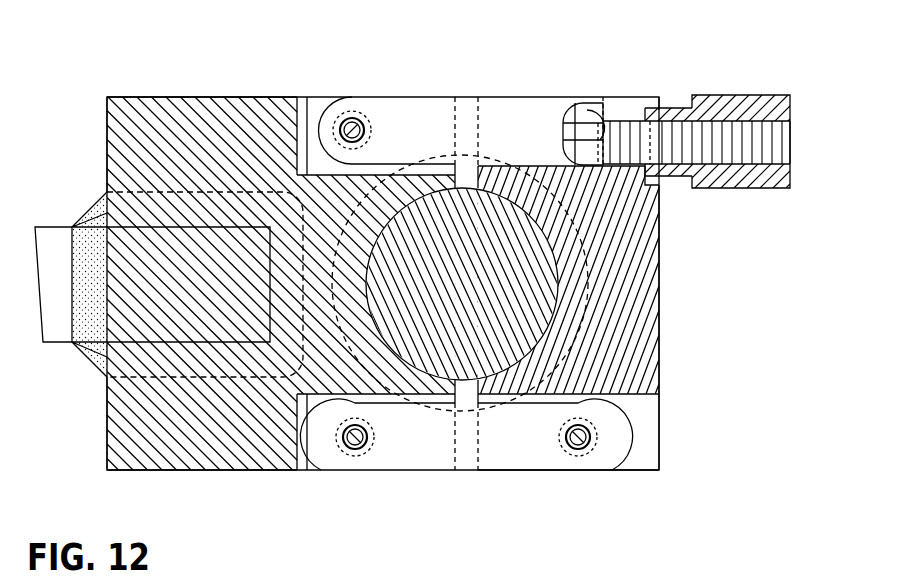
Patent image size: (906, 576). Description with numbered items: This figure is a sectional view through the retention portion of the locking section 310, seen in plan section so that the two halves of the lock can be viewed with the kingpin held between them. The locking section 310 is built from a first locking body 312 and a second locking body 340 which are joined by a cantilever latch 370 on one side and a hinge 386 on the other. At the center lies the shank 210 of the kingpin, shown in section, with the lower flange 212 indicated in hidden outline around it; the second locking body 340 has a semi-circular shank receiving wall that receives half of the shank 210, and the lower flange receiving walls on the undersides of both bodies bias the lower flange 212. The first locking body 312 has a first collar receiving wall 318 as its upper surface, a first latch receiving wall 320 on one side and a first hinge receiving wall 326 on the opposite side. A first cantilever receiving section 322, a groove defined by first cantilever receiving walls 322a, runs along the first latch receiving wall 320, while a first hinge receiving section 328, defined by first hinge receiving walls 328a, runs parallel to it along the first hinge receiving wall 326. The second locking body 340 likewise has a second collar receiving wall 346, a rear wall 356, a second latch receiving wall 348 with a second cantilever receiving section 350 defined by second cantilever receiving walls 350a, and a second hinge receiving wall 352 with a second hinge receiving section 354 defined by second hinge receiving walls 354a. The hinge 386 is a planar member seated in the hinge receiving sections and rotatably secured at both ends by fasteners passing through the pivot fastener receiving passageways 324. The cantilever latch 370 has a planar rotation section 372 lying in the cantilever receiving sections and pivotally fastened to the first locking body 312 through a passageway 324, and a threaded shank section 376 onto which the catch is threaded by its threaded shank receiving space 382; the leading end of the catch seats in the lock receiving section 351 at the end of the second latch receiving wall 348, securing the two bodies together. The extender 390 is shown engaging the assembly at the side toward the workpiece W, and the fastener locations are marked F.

The shank 210 is at (444, 297).
The lower flange 212 is at (497, 470).
The locking section 310 is at (207, 117).
The first locking body 312 is at (115, 160).
The first collar receiving wall 318 is at (107, 425).
The first latch receiving wall 320 is at (136, 97).
The first cantilever receiving section 322 is at (603, 103).
The first cantilever receiving walls 322a is at (618, 102).
The pivot fastener receiving passageway 324 is at (349, 118).
The first hinge receiving wall 326 is at (213, 470).
The first hinge receiving section 328 is at (331, 470).
The first hinge receiving walls 328a is at (315, 465).
The second locking body 340 is at (658, 333).
The second collar receiving wall 346 is at (645, 291).
The second latch receiving wall 348 is at (645, 107).
The second cantilever receiving section 350 is at (107, 127).
The second cantilever receiving walls 350a is at (313, 105).
The lock receiving section 351 is at (660, 175).
The second hinge receiving wall 352 is at (638, 470).
The second hinge receiving section 354 is at (625, 470).
The second hinge receiving walls 354a is at (613, 470).
The rear wall 356 is at (658, 373).
The cantilever latch 370 is at (666, 132).
The rotation section 372 is at (465, 106).
The threaded shank section 376 is at (632, 121).
The threaded shank receiving space 382 is at (753, 179).
The hinge 386 is at (468, 470).
The extender 390 is at (45, 237).
The fastener F is at (357, 118).
The workpiece W is at (80, 303).